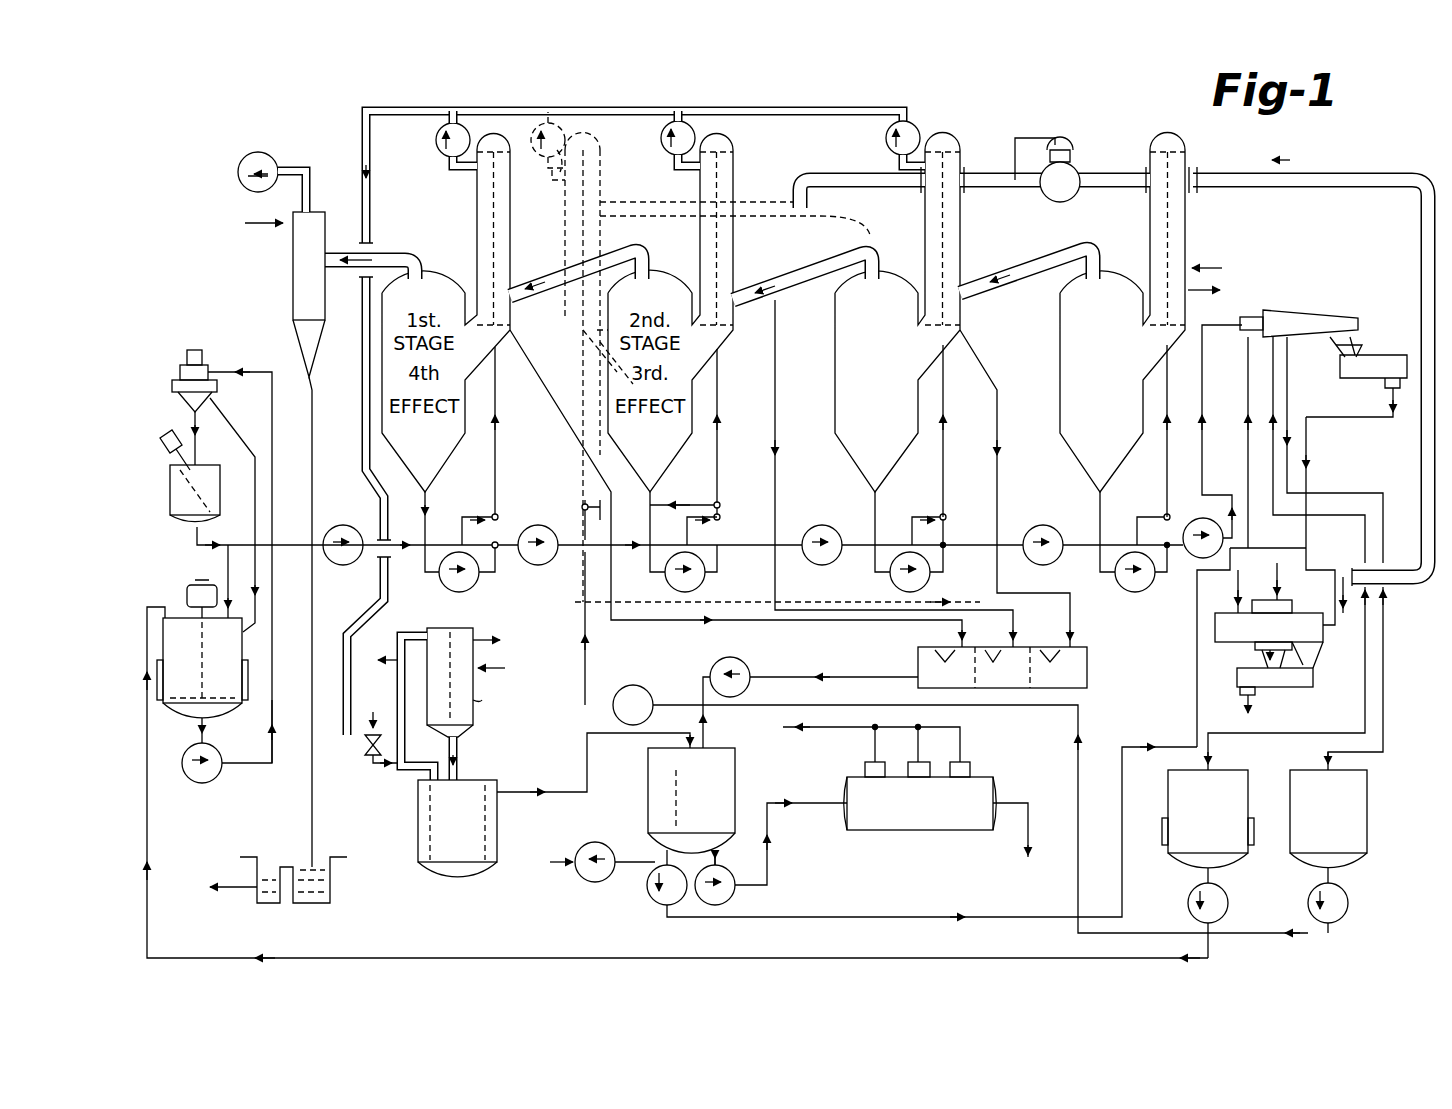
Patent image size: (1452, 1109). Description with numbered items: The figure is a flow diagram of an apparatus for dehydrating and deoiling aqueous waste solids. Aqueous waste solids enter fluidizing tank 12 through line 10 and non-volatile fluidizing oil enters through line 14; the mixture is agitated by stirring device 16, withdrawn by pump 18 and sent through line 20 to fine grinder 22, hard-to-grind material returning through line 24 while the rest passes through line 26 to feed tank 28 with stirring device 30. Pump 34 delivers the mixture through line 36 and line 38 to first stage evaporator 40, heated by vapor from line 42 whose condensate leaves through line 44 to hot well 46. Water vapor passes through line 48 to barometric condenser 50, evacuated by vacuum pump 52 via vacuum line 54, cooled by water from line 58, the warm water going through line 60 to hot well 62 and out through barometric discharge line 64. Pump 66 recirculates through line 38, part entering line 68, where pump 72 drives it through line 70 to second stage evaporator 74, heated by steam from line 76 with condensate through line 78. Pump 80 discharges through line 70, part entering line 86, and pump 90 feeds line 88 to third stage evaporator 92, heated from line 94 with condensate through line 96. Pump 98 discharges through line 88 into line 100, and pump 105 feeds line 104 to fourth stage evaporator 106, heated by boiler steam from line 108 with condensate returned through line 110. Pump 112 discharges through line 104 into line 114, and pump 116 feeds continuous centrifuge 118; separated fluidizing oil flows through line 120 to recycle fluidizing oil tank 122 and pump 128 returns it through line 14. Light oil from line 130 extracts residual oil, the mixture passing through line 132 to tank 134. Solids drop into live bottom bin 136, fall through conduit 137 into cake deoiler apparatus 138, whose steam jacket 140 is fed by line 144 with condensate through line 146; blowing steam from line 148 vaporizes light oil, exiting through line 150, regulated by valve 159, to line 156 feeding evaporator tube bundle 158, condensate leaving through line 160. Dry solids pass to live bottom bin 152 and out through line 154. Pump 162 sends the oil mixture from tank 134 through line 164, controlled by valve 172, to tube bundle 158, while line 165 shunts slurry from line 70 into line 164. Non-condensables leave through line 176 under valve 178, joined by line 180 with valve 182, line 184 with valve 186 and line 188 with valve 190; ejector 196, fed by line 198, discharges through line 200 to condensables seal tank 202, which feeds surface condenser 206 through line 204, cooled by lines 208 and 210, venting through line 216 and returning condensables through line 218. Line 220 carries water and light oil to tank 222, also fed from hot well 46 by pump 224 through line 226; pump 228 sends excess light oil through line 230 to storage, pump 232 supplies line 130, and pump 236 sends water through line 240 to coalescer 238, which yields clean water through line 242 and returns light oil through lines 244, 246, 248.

The line 10 is at (228, 572).
The fluidizing tank 12 is at (180, 722).
The line 14 is at (148, 830).
The stirring device 16 is at (190, 582).
The pump 18 is at (205, 785).
The line 20 is at (258, 776).
The fine grinder 22 is at (208, 360).
The line 24 is at (216, 420).
The line 26 is at (198, 450).
The feed tank 28 is at (170, 493).
The stirring device 30 is at (172, 432).
The pump 34 is at (355, 528).
The line 36 is at (412, 552).
The line 38 is at (497, 448).
The first stage or fourth effect evaporator 40 is at (436, 470).
The line 42 is at (562, 262).
The line 44 is at (545, 385).
The hot well 46 is at (1088, 660).
The line 48 is at (393, 253).
The barometric condenser 50 is at (293, 278).
The vacuum pump 52 is at (240, 182).
The vacuum line 54 is at (285, 172).
The line 58 is at (265, 228).
The line 60 is at (313, 410).
The hot well 62 is at (332, 884).
The barometric discharge line 64 is at (245, 893).
The pump 66 is at (478, 592).
The line 68 is at (500, 535).
The line 70 is at (718, 440).
The pump 72 is at (522, 565).
The second stage evaporator 74 is at (658, 472).
The line 76 is at (810, 263).
The line 78 is at (770, 352).
The pump 80 is at (706, 580).
The line 86 is at (720, 518).
The line 88 is at (935, 455).
The pump 90 is at (834, 526).
The third stage evaporator 92 is at (898, 456).
The line 94 is at (1028, 262).
The line 96 is at (985, 343).
The pump 98 is at (932, 578).
The line 100 is at (962, 545).
The line 104 is at (1098, 486).
The pump 105 is at (1050, 526).
The fourth stage evaporator 106 is at (1068, 445).
The line 108 is at (1207, 268).
The line 110 is at (1196, 290).
The pump 112 is at (1112, 577).
The line 114 is at (1203, 383).
The pump 116 is at (1214, 522).
The continuous centrifuge 118 is at (1313, 310).
The line 120 is at (1258, 445).
The recycle fluidizing oil tank 122 is at (1168, 793).
The pump 128 is at (1222, 896).
The line 130 is at (1246, 410).
The line 132 is at (1290, 392).
The tank 134 is at (1370, 798).
The live bottom bin 136 is at (1365, 352).
The conduit 137 is at (1308, 440).
The cake deoiler apparatus 138 is at (1222, 614).
The steam jacket 140 is at (1240, 580).
The line 144 is at (1278, 582).
The line 146 is at (1262, 658).
The line 148 is at (1345, 548).
The line 150 is at (1347, 172).
The live bottom bin 152 is at (1280, 700).
The line 154 is at (1247, 711).
The line 156 is at (798, 221).
The evaporator tube bundle 158 is at (565, 220).
The valve 159 is at (1070, 162).
The line 160 is at (565, 348).
The pump 162 is at (1350, 903).
The line 164 is at (577, 485).
The line 165 is at (605, 510).
The valve 172 is at (612, 710).
The line 176 is at (822, 108).
The valve 178 is at (915, 128).
The line 180 is at (670, 168).
The valve 182 is at (661, 138).
The line 184 is at (552, 178).
The valve 186 is at (562, 128).
The line 188 is at (440, 168).
The valve 190 is at (436, 140).
The ejector 196 is at (365, 757).
The line 198 is at (370, 715).
The line 200 is at (395, 768).
The condensables seal tank 202 is at (416, 808).
The line 204 is at (397, 630).
The surface condenser 206 is at (482, 705).
The line 208 is at (500, 670).
The line 210 is at (385, 660).
The line 216 is at (495, 638).
The line 218 is at (475, 745).
The line 220 is at (582, 772).
The tank 222 is at (740, 770).
The pump 224 is at (745, 664).
The line 226 is at (700, 678).
The pump 228 is at (597, 842).
The line 230 is at (550, 858).
The pump 232 is at (645, 898).
The pump 236 is at (735, 900).
The coalescer 238 is at (875, 832).
The line 240 is at (808, 800).
The line 242 is at (1025, 842).
The line 244 is at (836, 735).
The line 246 is at (919, 742).
The line 248 is at (876, 742).